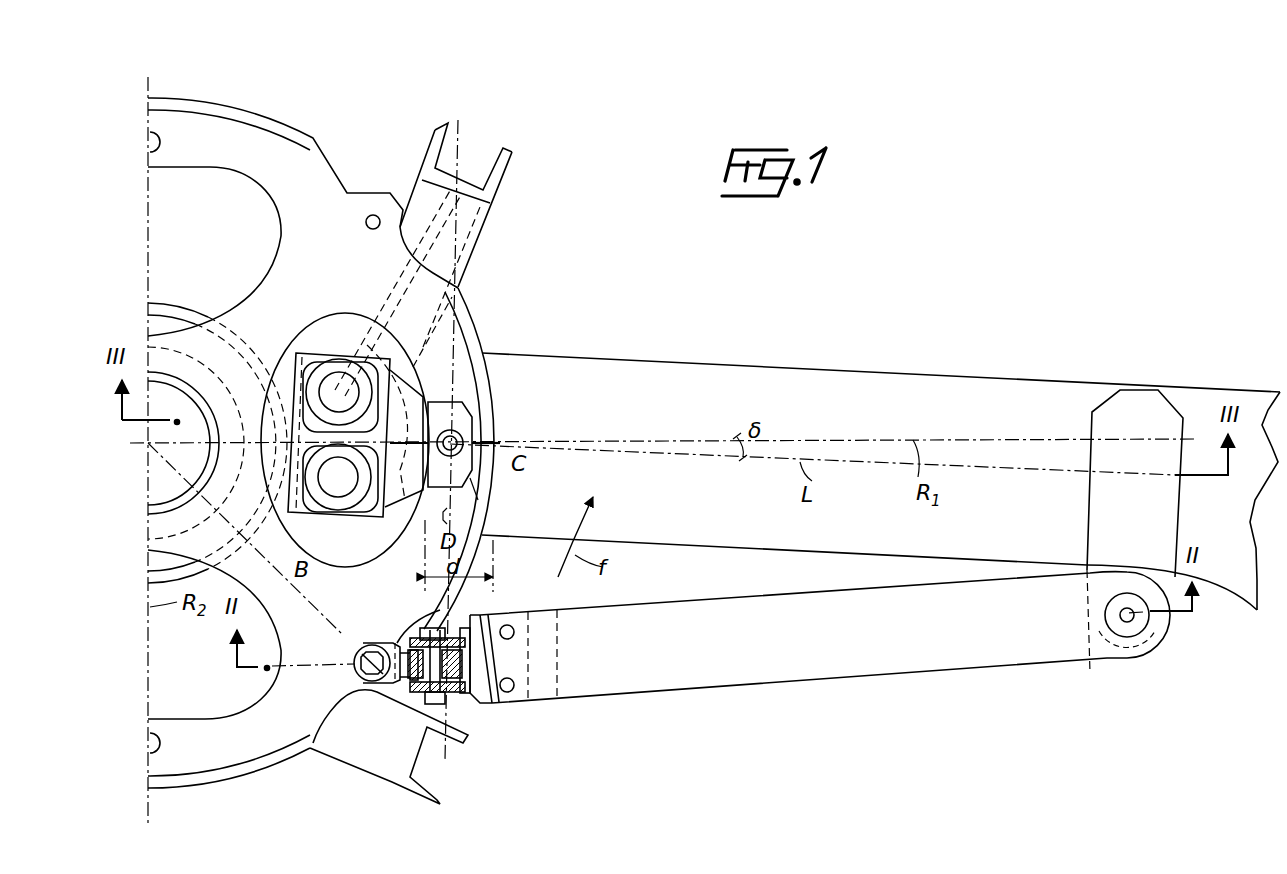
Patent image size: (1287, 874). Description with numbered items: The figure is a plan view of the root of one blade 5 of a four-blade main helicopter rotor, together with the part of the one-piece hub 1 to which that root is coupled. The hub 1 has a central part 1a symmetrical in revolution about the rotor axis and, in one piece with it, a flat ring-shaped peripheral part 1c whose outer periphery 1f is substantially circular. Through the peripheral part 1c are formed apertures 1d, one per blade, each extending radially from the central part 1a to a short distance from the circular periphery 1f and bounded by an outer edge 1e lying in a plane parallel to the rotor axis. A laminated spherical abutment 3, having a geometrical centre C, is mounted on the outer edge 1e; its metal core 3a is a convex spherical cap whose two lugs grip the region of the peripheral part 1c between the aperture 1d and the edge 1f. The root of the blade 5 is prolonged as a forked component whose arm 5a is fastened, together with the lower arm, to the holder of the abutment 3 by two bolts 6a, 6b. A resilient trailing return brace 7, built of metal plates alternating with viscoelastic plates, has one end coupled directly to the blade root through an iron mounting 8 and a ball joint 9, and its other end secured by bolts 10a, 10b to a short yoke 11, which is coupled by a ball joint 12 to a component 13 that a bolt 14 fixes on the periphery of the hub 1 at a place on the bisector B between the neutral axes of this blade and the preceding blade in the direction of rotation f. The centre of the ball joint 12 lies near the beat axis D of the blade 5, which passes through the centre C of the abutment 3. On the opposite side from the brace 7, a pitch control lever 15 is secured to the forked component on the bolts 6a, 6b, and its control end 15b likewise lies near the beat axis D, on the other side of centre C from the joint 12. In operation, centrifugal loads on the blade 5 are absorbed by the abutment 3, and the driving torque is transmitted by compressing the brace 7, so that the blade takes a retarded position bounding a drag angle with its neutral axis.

The hub 1 is at (470, 517).
The central part 1a is at (230, 463).
The peripheral part 1c is at (430, 596).
The aperture 1d is at (383, 561).
The outer edge 1e is at (462, 492).
The circular periphery 1f is at (493, 400).
The laminated spherical abutment 3 is at (407, 512).
The core 3a is at (485, 356).
The blade 5 is at (1200, 403).
The arm 5a is at (771, 387).
The bolt 6a is at (333, 487).
The bolt 6b is at (336, 385).
The resilient trailing return brace 7 is at (860, 684).
The iron mounting 8 is at (1173, 510).
The ball joint 9 is at (1105, 650).
The bolt 10a is at (513, 690).
The bolt 10b is at (513, 625).
The short yoke 11 is at (460, 688).
The ball joint 12 is at (443, 642).
The component 13 is at (400, 647).
The bolt 14 is at (368, 647).
The pitch control lever 15 is at (488, 235).
The control end 15b is at (490, 170).